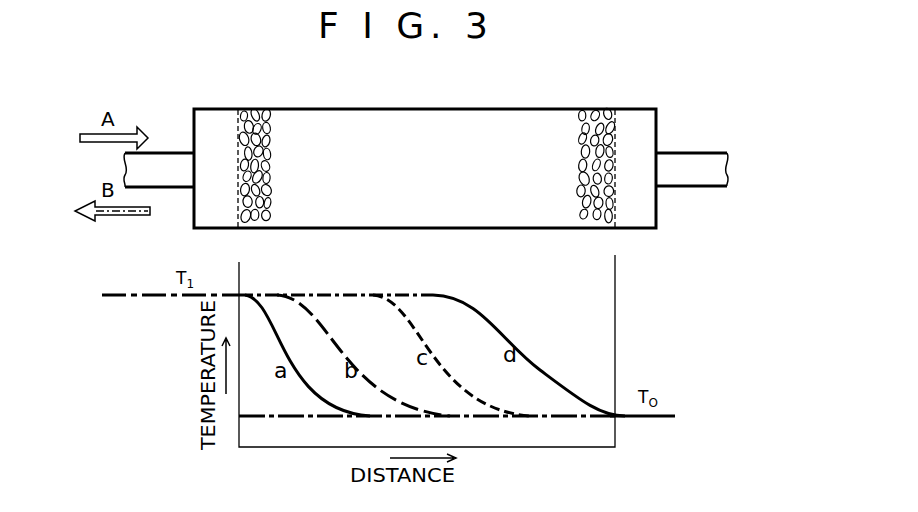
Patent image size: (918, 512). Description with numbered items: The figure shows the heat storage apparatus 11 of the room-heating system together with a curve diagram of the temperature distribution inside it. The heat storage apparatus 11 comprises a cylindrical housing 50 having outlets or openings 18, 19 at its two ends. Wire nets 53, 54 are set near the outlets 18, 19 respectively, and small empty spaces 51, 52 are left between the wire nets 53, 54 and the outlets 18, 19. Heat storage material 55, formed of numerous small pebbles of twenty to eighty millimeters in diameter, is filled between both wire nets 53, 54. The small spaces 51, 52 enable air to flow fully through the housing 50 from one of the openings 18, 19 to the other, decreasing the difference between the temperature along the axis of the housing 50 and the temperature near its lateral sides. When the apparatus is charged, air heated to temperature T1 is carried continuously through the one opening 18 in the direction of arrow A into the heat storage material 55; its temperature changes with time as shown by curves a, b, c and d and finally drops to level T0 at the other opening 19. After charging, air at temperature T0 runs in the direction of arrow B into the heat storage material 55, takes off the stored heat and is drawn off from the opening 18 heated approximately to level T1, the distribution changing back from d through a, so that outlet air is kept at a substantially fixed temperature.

The heat storage apparatus 11 is at (428, 184).
The opening 18 is at (185, 188).
The opening 19 is at (670, 165).
The cylindrical housing 50 is at (455, 109).
The small space 51 is at (228, 184).
The small space 52 is at (650, 184).
The wire net 53 is at (241, 131).
The wire net 54 is at (614, 122).
The heat storage material 55 is at (267, 159).